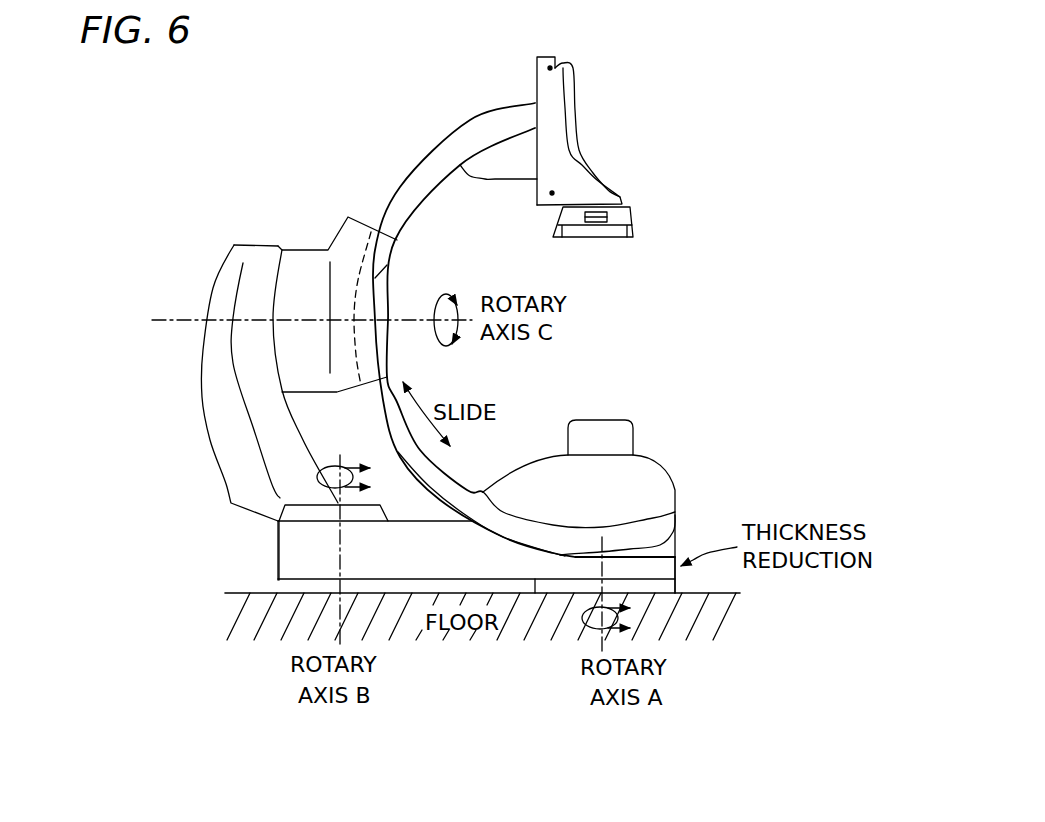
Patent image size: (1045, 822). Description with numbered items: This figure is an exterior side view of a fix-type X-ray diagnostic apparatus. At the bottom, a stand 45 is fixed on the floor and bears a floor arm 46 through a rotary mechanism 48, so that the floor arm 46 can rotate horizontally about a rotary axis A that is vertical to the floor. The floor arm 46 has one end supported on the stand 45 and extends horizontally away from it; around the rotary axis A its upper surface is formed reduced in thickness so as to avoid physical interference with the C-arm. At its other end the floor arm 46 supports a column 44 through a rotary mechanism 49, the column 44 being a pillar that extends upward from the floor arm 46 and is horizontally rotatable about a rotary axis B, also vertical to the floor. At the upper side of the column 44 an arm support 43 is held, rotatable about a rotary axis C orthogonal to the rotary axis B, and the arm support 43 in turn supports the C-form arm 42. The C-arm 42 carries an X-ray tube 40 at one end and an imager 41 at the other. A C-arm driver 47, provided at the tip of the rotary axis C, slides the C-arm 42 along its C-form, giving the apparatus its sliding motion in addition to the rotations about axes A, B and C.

The X-ray tube 40 is at (652, 495).
The imager 41 is at (635, 222).
The C-form arm 42 is at (400, 187).
The arm support 43 is at (313, 258).
The column 44 is at (260, 267).
The stand 45 is at (657, 585).
The floor arm 46 is at (405, 563).
The C-arm driver 47 is at (383, 272).
The rotary mechanism 48 is at (558, 595).
The rotary mechanism 49 is at (310, 543).